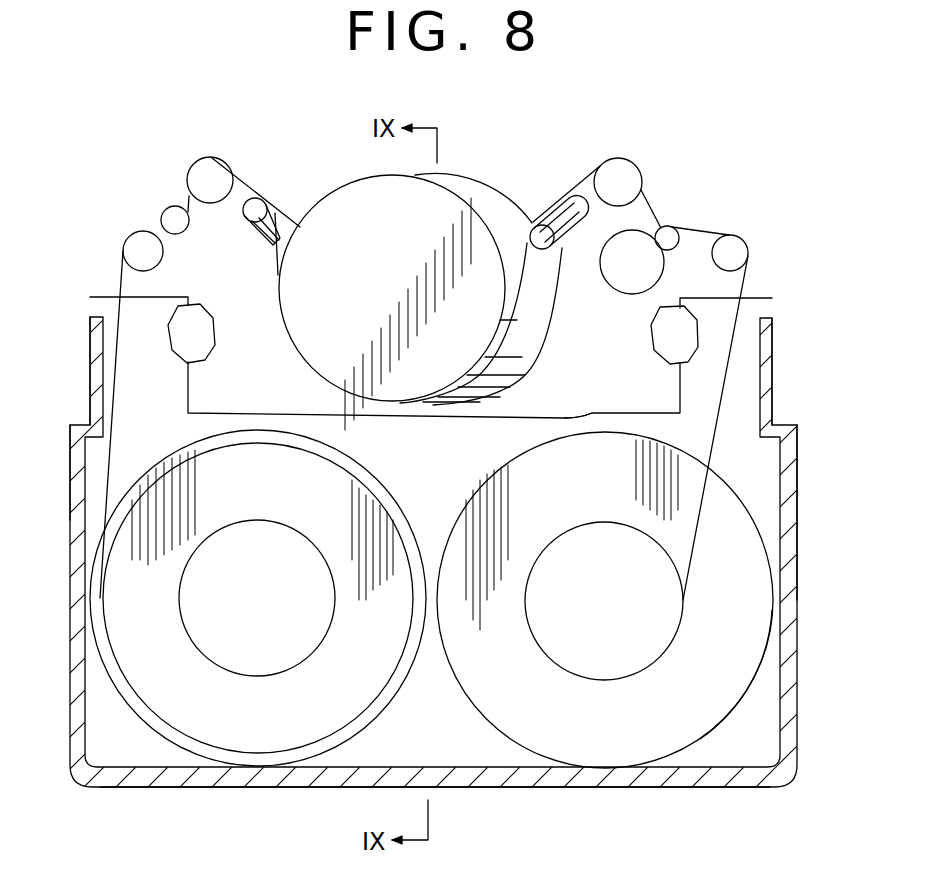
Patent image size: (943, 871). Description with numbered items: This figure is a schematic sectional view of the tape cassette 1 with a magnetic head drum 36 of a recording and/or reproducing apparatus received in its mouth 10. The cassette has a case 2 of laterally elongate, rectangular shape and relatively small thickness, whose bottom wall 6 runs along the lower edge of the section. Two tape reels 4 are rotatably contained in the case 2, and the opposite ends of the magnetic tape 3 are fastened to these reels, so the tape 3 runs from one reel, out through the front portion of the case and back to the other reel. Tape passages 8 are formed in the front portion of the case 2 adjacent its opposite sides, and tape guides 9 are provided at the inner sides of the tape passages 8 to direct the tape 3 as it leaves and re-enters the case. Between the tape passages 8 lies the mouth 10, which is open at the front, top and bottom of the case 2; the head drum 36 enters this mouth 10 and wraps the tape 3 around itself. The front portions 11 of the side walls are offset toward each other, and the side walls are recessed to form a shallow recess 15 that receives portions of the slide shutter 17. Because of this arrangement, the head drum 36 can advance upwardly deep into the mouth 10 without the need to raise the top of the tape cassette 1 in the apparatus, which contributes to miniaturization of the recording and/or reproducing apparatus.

The tape cassette 1 is at (573, 787).
The case 2 is at (665, 787).
The magnetic tape 3 is at (250, 185).
The tape reels 4 is at (393, 697).
The bottom wall 6 is at (762, 677).
The tape passages 8 is at (157, 303).
The tape guides 9 is at (178, 332).
The mouth 10 is at (545, 402).
The front portions of the side walls 11 is at (90, 358).
The shallow recess 15 is at (797, 548).
The slide shutter 17 is at (70, 507).
The magnetic head drum 36 is at (347, 193).